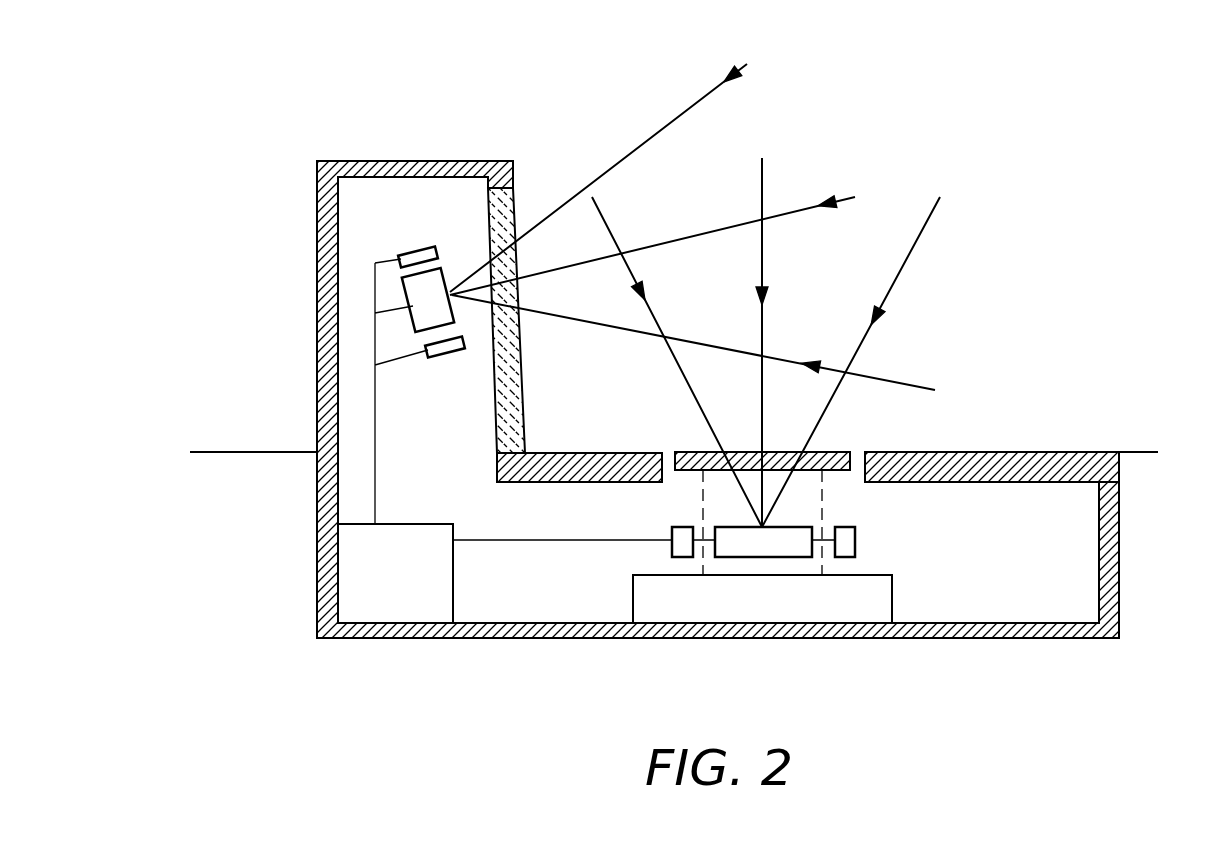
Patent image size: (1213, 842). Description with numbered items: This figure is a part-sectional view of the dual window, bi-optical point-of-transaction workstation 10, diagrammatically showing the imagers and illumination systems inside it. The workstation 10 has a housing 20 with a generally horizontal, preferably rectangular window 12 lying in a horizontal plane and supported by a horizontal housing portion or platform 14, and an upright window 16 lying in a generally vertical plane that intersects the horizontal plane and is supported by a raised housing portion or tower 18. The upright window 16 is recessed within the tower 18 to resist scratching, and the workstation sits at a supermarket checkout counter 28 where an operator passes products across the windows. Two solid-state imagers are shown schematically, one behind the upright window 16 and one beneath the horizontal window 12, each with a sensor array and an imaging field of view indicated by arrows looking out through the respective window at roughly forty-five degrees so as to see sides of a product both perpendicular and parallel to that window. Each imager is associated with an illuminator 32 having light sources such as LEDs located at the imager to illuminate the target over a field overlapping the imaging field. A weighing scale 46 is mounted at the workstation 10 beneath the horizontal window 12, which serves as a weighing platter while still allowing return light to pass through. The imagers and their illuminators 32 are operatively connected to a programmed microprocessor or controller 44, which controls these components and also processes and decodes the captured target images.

The point-of-transaction workstation 10 is at (1007, 395).
The horizontal window 12 is at (829, 452).
The horizontal housing portion 14 is at (1048, 452).
The upright window 16 is at (515, 218).
The tower 18 is at (513, 171).
The housing 20 is at (405, 154).
The checkout counter 28 is at (1144, 452).
The illuminator 32 is at (410, 251).
The controller 44 is at (392, 597).
The weighing scale 46 is at (643, 592).